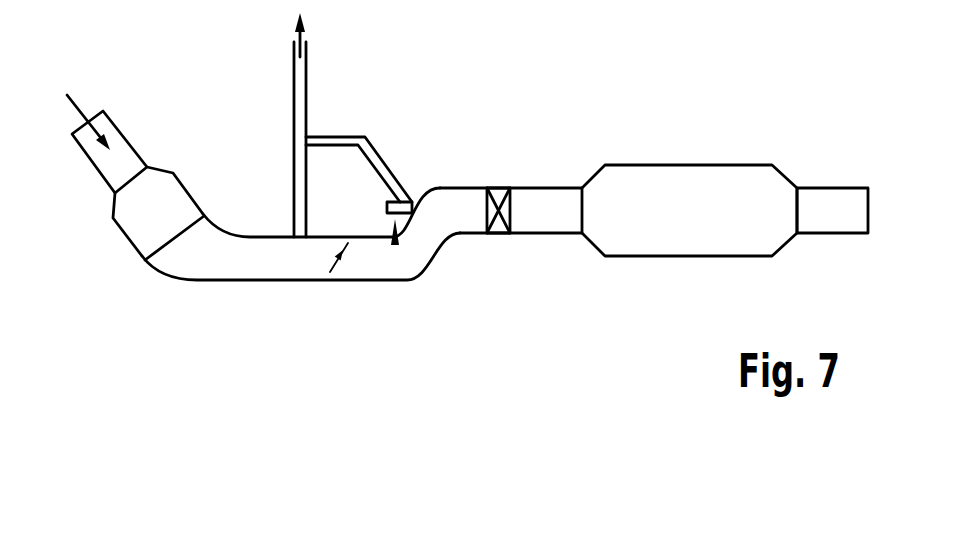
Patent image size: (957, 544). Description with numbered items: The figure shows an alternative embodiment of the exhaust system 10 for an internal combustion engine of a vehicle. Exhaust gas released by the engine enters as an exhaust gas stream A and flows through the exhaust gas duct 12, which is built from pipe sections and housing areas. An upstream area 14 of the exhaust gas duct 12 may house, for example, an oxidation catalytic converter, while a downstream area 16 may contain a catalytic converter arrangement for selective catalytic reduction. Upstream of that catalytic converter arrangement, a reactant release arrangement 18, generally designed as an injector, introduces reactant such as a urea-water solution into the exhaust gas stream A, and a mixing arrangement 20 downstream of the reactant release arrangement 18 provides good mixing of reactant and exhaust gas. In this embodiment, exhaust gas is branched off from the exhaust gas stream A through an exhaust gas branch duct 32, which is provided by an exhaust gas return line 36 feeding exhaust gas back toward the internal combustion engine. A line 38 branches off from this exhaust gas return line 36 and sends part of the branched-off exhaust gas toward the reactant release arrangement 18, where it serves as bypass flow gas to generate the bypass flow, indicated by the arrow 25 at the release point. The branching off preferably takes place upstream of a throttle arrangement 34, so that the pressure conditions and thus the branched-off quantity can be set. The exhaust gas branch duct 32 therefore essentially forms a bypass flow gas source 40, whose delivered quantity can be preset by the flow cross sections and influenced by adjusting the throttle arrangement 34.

The exhaust system 10 is at (467, 190).
The exhaust gas duct 12 is at (248, 282).
The upstream area 14 is at (127, 240).
The downstream area 16 is at (675, 164).
The reactant release arrangement 18 is at (428, 176).
The mixing arrangement 20 is at (510, 218).
The injected flow arrow 25 is at (396, 245).
The exhaust gas branch duct 32 is at (292, 195).
The throttle arrangement 34 is at (341, 258).
The exhaust gas return line 36 is at (308, 88).
The line 38 is at (385, 163).
The bypass flow gas source 40 is at (260, 133).
The exhaust gas stream A is at (79, 107).